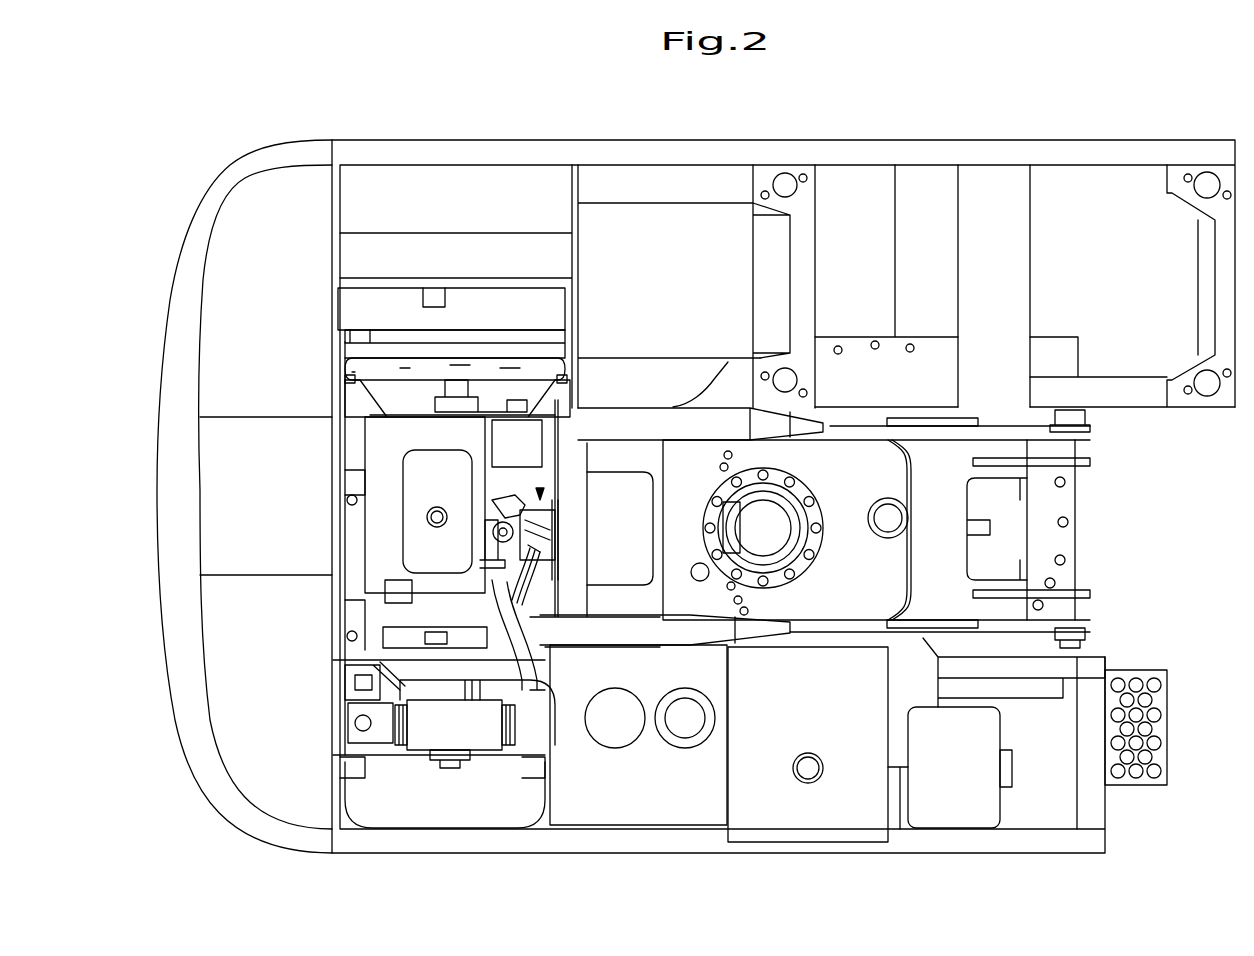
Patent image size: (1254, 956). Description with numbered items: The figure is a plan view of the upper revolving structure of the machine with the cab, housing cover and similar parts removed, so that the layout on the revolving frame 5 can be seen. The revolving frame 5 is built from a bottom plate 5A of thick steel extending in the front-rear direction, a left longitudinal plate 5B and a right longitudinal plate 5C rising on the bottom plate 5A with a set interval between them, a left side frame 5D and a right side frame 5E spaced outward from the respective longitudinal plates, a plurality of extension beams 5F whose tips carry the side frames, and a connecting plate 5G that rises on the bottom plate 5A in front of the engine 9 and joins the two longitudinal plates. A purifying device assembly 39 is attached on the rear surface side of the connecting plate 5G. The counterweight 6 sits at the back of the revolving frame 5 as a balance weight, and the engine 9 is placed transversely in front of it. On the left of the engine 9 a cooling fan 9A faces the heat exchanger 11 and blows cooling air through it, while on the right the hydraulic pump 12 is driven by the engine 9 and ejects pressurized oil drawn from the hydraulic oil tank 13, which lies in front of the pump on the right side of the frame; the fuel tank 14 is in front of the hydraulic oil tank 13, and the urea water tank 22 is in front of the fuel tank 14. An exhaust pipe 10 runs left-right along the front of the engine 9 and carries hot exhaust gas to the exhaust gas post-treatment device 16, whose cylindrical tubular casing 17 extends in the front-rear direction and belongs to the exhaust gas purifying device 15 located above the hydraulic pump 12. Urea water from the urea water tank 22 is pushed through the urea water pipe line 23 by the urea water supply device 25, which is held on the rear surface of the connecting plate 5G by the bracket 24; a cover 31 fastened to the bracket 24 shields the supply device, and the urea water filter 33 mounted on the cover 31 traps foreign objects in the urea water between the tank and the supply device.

The revolving frame 5 is at (860, 160).
The bottom plate 5A is at (870, 373).
The left longitudinal plate 5B is at (660, 430).
The right longitudinal plate 5C is at (822, 640).
The left side frame 5D is at (640, 150).
The right side frame 5E is at (668, 843).
The extension beams 5F is at (762, 180).
The connecting plate 5G is at (612, 465).
The counterweight 6 is at (157, 478).
The engine 9 is at (383, 518).
The cooling fan 9A is at (340, 372).
The exhaust pipe 10 is at (528, 650).
The heat exchanger 11 is at (463, 305).
The hydraulic pump 12 is at (445, 758).
The hydraulic oil tank 13 is at (620, 795).
The fuel tank 14 is at (805, 812).
The exhaust gas purifying device 15 is at (393, 768).
The exhaust gas post-treatment device 16 is at (483, 737).
The tubular casing 17 is at (427, 740).
The urea water tank 22 is at (950, 800).
The urea water pipe line 23 is at (897, 775).
The bracket 24 is at (558, 527).
The urea water supply device 25 is at (548, 536).
The cover 31 is at (515, 500).
The urea water filter 33 is at (495, 538).
The purifying device assembly 39 is at (542, 488).